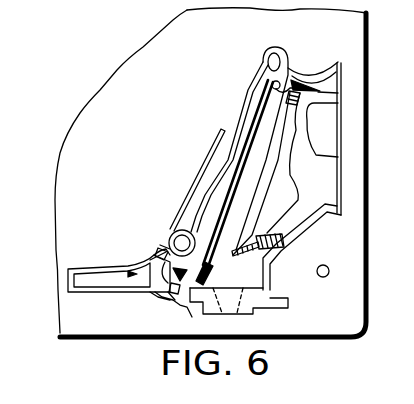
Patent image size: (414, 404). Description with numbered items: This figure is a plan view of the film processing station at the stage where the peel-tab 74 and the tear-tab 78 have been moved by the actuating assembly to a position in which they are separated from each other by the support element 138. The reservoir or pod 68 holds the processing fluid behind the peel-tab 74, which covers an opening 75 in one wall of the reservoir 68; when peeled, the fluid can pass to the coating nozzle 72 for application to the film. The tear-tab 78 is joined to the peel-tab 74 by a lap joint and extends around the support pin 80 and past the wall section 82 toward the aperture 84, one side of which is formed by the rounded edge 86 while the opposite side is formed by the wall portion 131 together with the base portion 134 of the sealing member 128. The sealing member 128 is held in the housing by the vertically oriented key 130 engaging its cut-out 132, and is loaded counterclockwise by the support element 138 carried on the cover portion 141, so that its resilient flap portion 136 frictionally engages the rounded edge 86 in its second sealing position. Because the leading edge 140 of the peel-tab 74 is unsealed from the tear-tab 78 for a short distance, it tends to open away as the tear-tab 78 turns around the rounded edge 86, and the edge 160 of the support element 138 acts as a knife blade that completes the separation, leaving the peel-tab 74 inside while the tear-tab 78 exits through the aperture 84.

The reservoir or pod 68 is at (313, 175).
The coating nozzle 72 is at (234, 274).
The peel-tab 74 is at (222, 228).
The opening 75 is at (256, 172).
The tear-tab 78 is at (198, 177).
The support pin 80 is at (280, 78).
The wall section 82 is at (228, 216).
The aperture 84 is at (163, 240).
The rounded edge 86 is at (171, 237).
The sealing member 128 is at (68, 279).
The key 130 is at (163, 254).
The wall portion 131 is at (158, 247).
The cut-out 132 is at (150, 262).
The base portion 134 is at (147, 270).
The flap portion 136 is at (163, 263).
The support element 138 is at (172, 302).
The leading edge 140 is at (192, 290).
The cover portion 141 is at (327, 118).
The edge of support element 160 is at (190, 272).